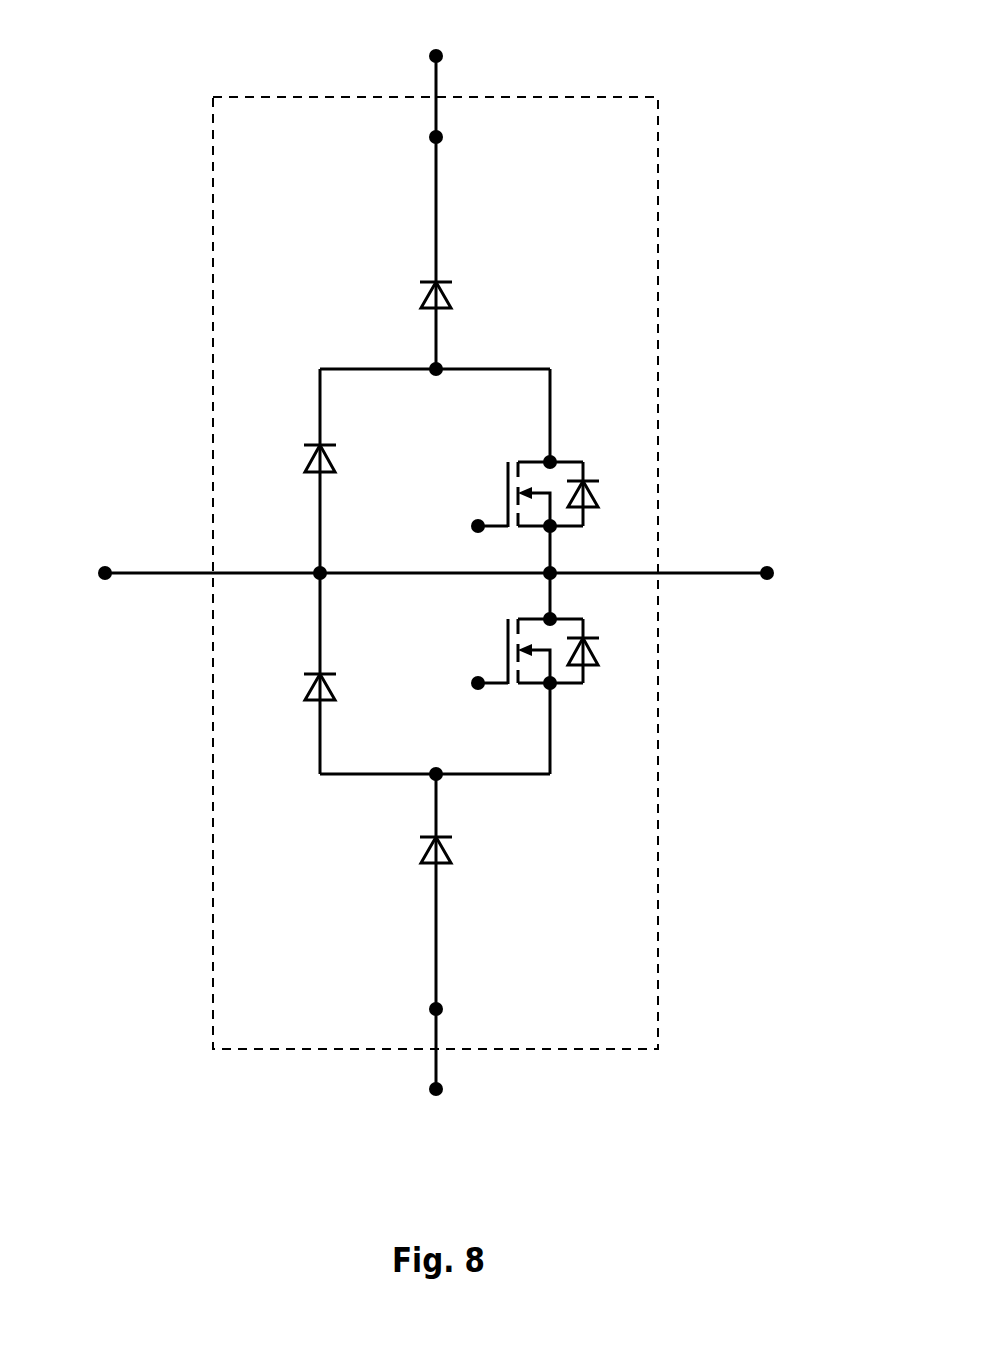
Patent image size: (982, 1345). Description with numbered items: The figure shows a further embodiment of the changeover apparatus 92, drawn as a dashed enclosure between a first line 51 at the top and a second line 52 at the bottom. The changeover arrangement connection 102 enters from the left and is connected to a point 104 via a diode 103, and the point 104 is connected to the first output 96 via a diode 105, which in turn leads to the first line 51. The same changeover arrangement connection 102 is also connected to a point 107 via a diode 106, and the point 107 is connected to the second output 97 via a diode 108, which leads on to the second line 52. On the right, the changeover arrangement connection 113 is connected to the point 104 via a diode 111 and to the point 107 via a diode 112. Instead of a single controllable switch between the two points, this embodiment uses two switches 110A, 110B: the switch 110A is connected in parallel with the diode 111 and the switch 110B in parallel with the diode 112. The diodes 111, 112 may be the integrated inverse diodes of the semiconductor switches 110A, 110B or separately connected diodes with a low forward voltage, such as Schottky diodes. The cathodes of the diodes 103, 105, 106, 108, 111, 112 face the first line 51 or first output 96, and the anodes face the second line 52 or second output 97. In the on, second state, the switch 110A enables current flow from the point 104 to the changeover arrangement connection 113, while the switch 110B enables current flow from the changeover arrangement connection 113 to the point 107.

The first line 51 is at (443, 52).
The second line 52 is at (442, 1094).
The changeover apparatus 92 is at (658, 117).
The first output 96 is at (442, 142).
The second output 97 is at (442, 1004).
The changeover arrangement connection 102 is at (105, 565).
The diode 103 is at (313, 456).
The point 104 is at (442, 365).
The diode 105 is at (427, 292).
The diode 106 is at (313, 684).
The point 107 is at (432, 780).
The diode 108 is at (445, 848).
The switch 110A is at (501, 493).
The switch 110B is at (501, 651).
The diode 111 is at (600, 501).
The diode 112 is at (600, 658).
The changeover arrangement connection 113 is at (770, 565).